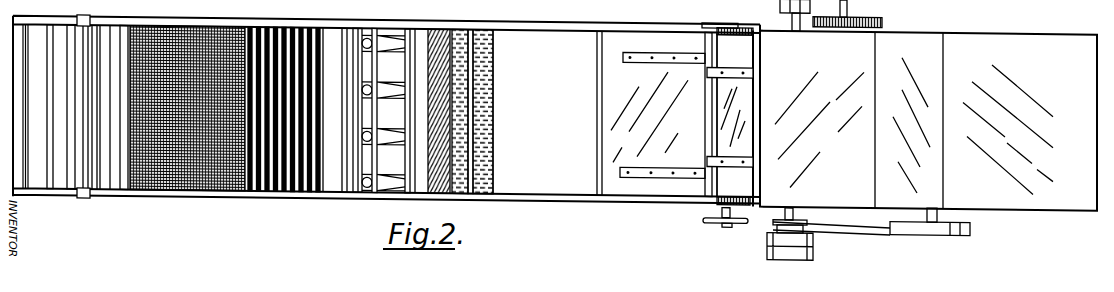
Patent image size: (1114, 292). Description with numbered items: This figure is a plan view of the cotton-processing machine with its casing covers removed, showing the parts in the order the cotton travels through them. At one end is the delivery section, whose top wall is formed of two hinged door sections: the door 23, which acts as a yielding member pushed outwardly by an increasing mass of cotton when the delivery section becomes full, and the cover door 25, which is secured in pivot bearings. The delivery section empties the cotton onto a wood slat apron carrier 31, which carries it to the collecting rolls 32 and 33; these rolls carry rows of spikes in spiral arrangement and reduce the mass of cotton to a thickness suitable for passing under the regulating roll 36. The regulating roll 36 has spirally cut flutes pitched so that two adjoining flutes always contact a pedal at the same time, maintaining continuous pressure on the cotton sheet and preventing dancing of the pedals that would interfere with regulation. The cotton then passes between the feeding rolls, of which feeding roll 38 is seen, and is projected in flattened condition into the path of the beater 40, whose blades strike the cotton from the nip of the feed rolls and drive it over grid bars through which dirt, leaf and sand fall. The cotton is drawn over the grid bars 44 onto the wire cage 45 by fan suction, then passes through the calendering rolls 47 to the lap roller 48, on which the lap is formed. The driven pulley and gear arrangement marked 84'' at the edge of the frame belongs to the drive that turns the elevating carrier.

The lap roller 48 is at (23, 69).
The calendering rolls 47 is at (83, 186).
The wire cage 45 is at (188, 192).
The grid bars 44 is at (280, 176).
The feeding roll 38 is at (416, 162).
The beater 40 is at (373, 27).
The regulating roll 36 is at (436, 30).
The collecting roll 33 is at (453, 187).
The collecting roll 32 is at (484, 184).
The wood slat apron carrier 31 is at (551, 183).
The cover door 25 is at (617, 186).
The door 23 is at (721, 178).
The knurled bar 84'' is at (862, 15).